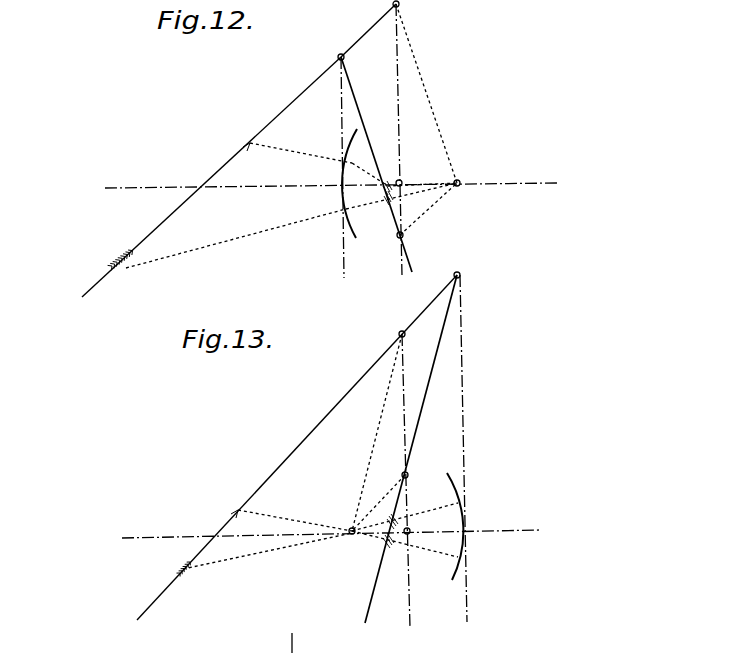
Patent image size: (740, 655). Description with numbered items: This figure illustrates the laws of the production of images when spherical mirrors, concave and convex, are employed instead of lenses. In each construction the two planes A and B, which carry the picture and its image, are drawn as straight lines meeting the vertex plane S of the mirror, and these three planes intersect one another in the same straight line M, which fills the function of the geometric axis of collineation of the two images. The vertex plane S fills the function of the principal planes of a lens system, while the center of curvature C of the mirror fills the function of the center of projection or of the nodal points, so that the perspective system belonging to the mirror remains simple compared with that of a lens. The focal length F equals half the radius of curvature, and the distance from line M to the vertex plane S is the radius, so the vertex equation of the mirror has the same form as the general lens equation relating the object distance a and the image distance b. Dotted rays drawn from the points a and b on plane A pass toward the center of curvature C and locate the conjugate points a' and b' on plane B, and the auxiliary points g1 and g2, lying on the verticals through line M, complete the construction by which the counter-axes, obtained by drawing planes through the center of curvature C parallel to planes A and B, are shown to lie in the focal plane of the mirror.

In FIG. 12, the plane A is at (210, 194).
In FIG. 13, the plane A is at (297, 458).
In FIG. 12, the plane B is at (380, 172).
In FIG. 13, the plane B is at (395, 458).
In FIG. 12, the center of curvature C is at (466, 169).
In FIG. 13, the center of curvature C is at (346, 517).
In FIG. 12, the focal length F is at (405, 173).
In FIG. 13, the focal length F is at (417, 521).
In FIG. 12, the straight line of intersection M is at (353, 32).
In FIG. 13, the straight line of intersection M is at (467, 263).
In FIG. 12, the vertex plane S is at (332, 183).
In FIG. 13, the vertex plane S is at (469, 526).
In FIG. 12, the object distance a is at (295, 138).
In FIG. 13, the object distance a is at (289, 506).
In FIG. 12, the image distance b is at (223, 239).
In FIG. 13, the image distance b is at (254, 555).
In FIG. 12, the image point a' is at (404, 170).
In FIG. 13, the image point a' is at (405, 548).
In FIG. 12, the image point b' is at (401, 204).
In FIG. 13, the image point b' is at (405, 515).
In FIG. 12, the auxiliary point g1 is at (425, 92).
In FIG. 13, the auxiliary point g1 is at (378, 424).
In FIG. 12, the auxiliary point g2 is at (427, 218).
In FIG. 13, the auxiliary point g2 is at (393, 489).